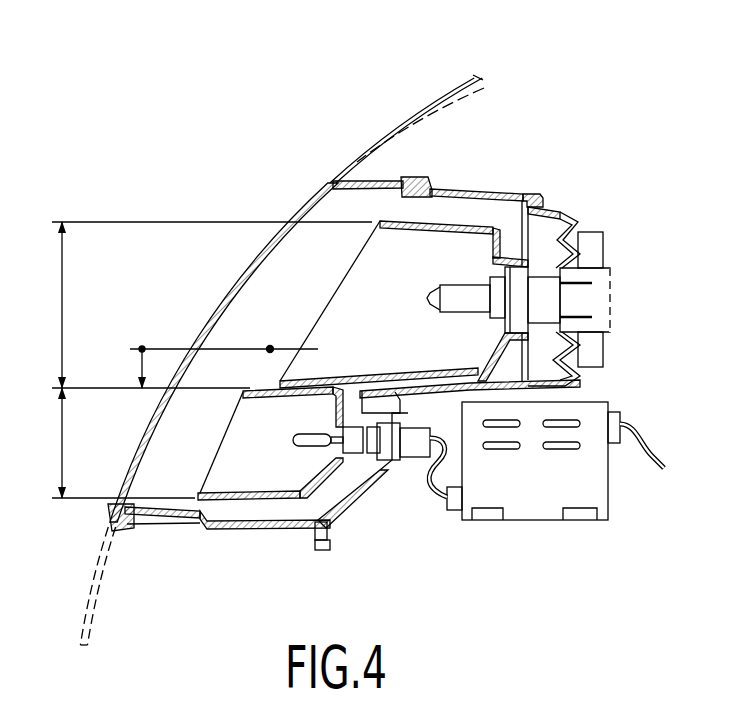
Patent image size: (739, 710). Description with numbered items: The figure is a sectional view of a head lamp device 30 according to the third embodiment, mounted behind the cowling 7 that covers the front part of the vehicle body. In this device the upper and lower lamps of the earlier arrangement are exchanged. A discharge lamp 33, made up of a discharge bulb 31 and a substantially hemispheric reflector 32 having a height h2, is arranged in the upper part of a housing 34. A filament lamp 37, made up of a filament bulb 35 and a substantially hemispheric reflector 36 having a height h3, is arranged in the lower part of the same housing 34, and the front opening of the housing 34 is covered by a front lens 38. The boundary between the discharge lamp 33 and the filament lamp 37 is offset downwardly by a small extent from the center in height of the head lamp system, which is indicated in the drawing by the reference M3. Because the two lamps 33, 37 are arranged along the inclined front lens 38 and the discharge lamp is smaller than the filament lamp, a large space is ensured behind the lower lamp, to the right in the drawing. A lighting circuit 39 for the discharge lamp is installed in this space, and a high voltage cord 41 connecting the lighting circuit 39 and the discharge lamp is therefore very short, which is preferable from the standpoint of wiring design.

The head lamp device 30 is at (326, 170).
The cowling 7 is at (378, 148).
The discharge bulb 31 is at (468, 287).
The reflector 32 is at (404, 229).
The discharge lamp 33 is at (336, 259).
The housing 34 is at (294, 526).
The filament bulb 35 is at (321, 435).
The reflector 36 is at (246, 491).
The filament lamp 37 is at (192, 468).
The front lens 38 is at (222, 298).
The lighting circuit 39 is at (554, 521).
The high voltage cord 41 is at (428, 497).
The reference point M3 is at (270, 346).
The height of reflector h2 is at (200, 305).
The height of reflector h3 is at (111, 443).